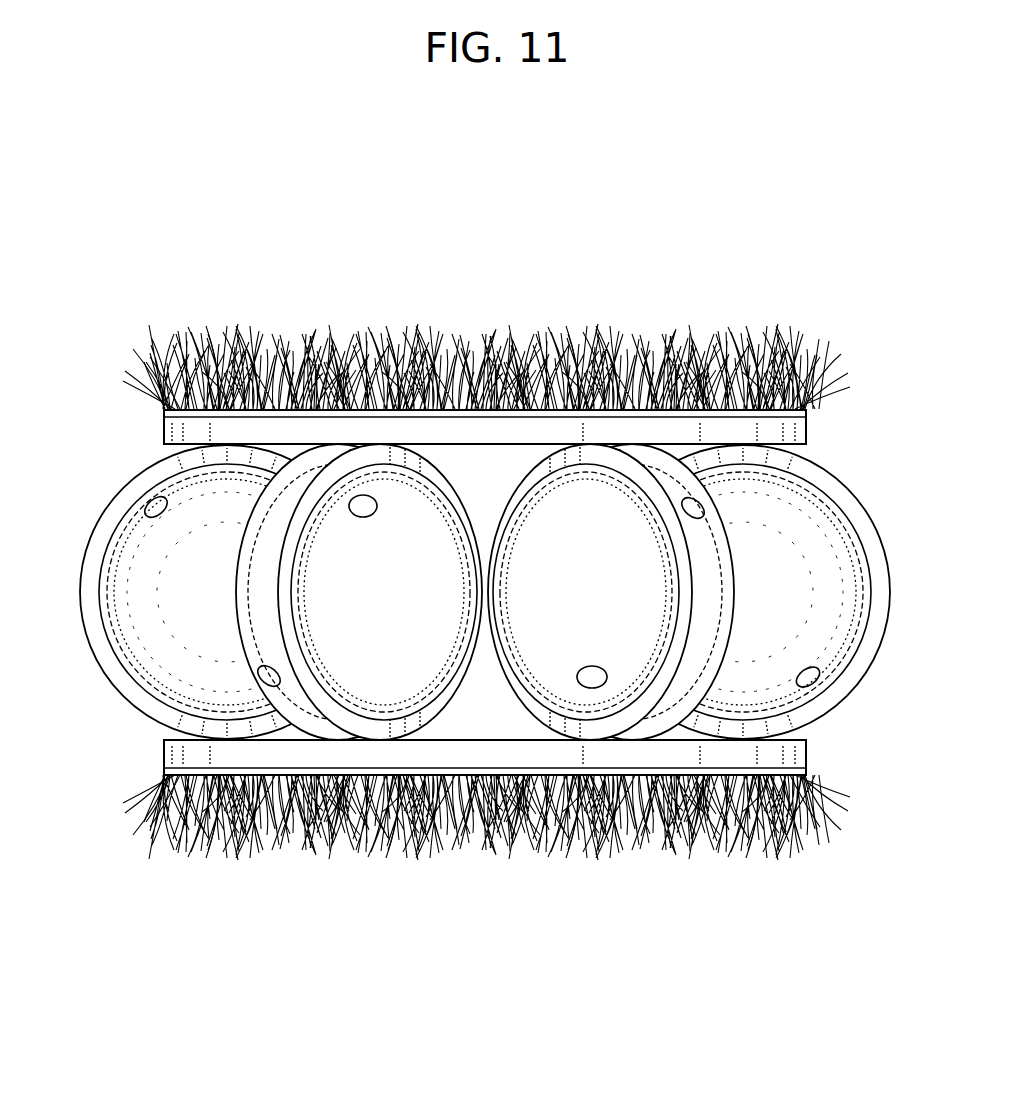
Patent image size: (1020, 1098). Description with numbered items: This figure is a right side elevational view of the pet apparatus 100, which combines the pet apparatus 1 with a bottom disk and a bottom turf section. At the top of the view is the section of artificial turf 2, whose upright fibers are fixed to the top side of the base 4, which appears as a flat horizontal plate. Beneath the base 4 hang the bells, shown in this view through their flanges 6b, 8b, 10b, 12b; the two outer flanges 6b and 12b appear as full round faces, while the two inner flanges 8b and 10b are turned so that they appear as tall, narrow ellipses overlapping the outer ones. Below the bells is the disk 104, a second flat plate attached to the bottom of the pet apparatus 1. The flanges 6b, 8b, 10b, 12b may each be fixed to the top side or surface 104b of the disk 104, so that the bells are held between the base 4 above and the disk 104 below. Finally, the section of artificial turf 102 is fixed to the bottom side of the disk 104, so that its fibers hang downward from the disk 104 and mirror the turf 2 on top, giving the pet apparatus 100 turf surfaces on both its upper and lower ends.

The pet apparatus 1 is at (124, 388).
The pet apparatus 100 is at (728, 309).
The section of artificial turf 2 is at (385, 332).
The base 4 is at (399, 440).
The flange 6b is at (93, 566).
The flange 8b is at (286, 548).
The flange 10b is at (658, 498).
The flange 12b is at (800, 473).
The section of artificial turf 102 is at (555, 860).
The disk 104 is at (457, 752).
The top side or surface 104b is at (513, 738).